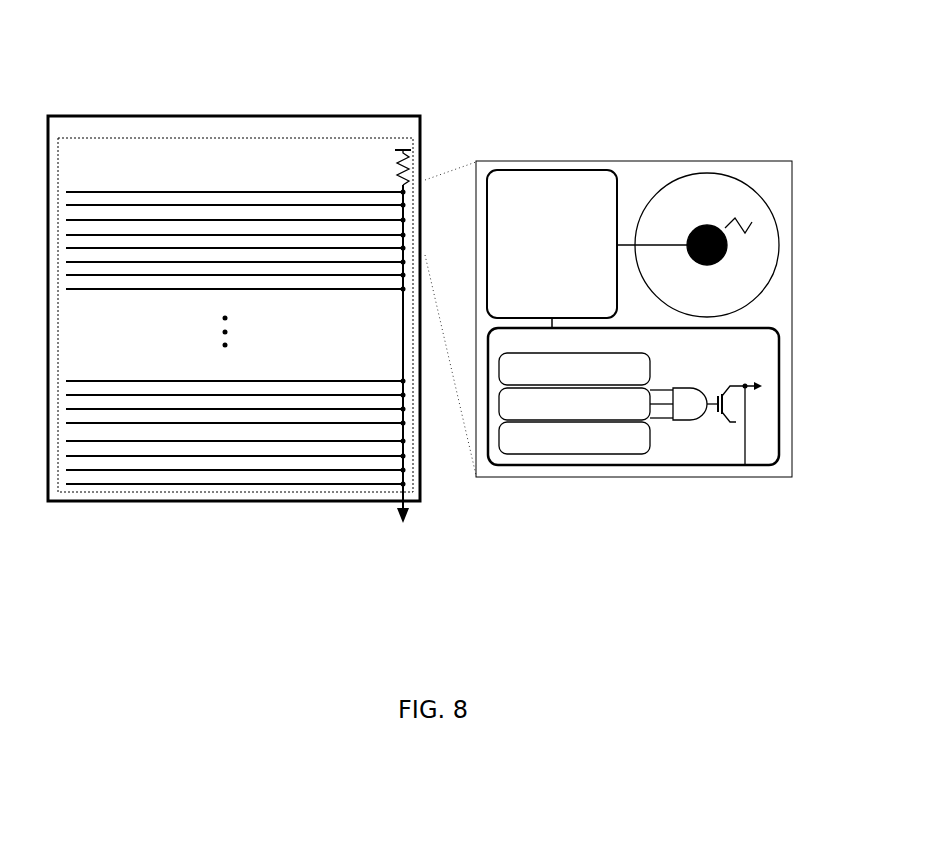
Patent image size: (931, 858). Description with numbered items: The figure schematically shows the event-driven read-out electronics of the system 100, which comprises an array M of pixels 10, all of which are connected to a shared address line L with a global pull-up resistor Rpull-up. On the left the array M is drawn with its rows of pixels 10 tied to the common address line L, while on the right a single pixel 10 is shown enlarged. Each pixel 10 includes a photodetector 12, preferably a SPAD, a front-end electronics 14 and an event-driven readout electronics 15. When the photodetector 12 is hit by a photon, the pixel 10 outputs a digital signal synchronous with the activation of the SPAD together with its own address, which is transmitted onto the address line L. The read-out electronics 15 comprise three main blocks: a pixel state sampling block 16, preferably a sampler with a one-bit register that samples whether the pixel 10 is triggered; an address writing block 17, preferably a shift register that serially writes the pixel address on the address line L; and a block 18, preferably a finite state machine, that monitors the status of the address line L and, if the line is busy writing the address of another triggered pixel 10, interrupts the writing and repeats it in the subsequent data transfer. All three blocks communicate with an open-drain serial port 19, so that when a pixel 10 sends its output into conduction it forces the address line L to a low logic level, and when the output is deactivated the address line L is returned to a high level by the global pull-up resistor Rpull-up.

The system 100 is at (248, 92).
The array M is at (328, 115).
The pull-up resistor Rpull-up is at (370, 167).
The address line L is at (408, 362).
The pixel 10 is at (676, 152).
The photodetector 12 is at (726, 183).
The front-end electronics 14 is at (558, 192).
The event-driven readout electronics 15 is at (781, 430).
The pixel state sampling block 16 is at (586, 371).
The address writing block 17 is at (586, 404).
The address line monitoring block 18 is at (586, 436).
The open-drain serial port 19 is at (701, 430).